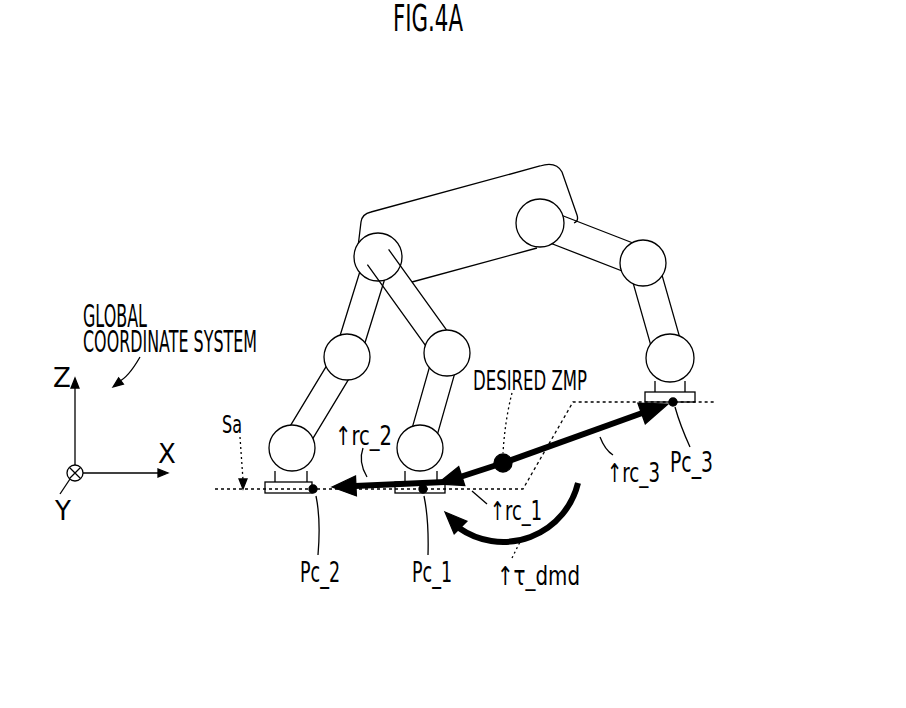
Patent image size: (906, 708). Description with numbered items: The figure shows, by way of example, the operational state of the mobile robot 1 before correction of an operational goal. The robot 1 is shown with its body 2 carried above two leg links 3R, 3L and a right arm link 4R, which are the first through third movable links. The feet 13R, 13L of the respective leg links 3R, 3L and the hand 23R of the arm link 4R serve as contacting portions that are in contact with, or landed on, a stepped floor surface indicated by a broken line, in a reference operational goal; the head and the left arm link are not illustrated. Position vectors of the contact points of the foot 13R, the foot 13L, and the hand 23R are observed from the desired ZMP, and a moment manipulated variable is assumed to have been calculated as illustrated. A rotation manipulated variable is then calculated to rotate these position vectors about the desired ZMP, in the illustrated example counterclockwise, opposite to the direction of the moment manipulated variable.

The robot 1 is at (593, 133).
The body 2 is at (470, 182).
The leg link 3L is at (319, 323).
The leg link 3R is at (465, 310).
The arm link 4R is at (685, 272).
The foot 13L is at (278, 496).
The foot 13R is at (397, 496).
The hand 23R is at (700, 400).